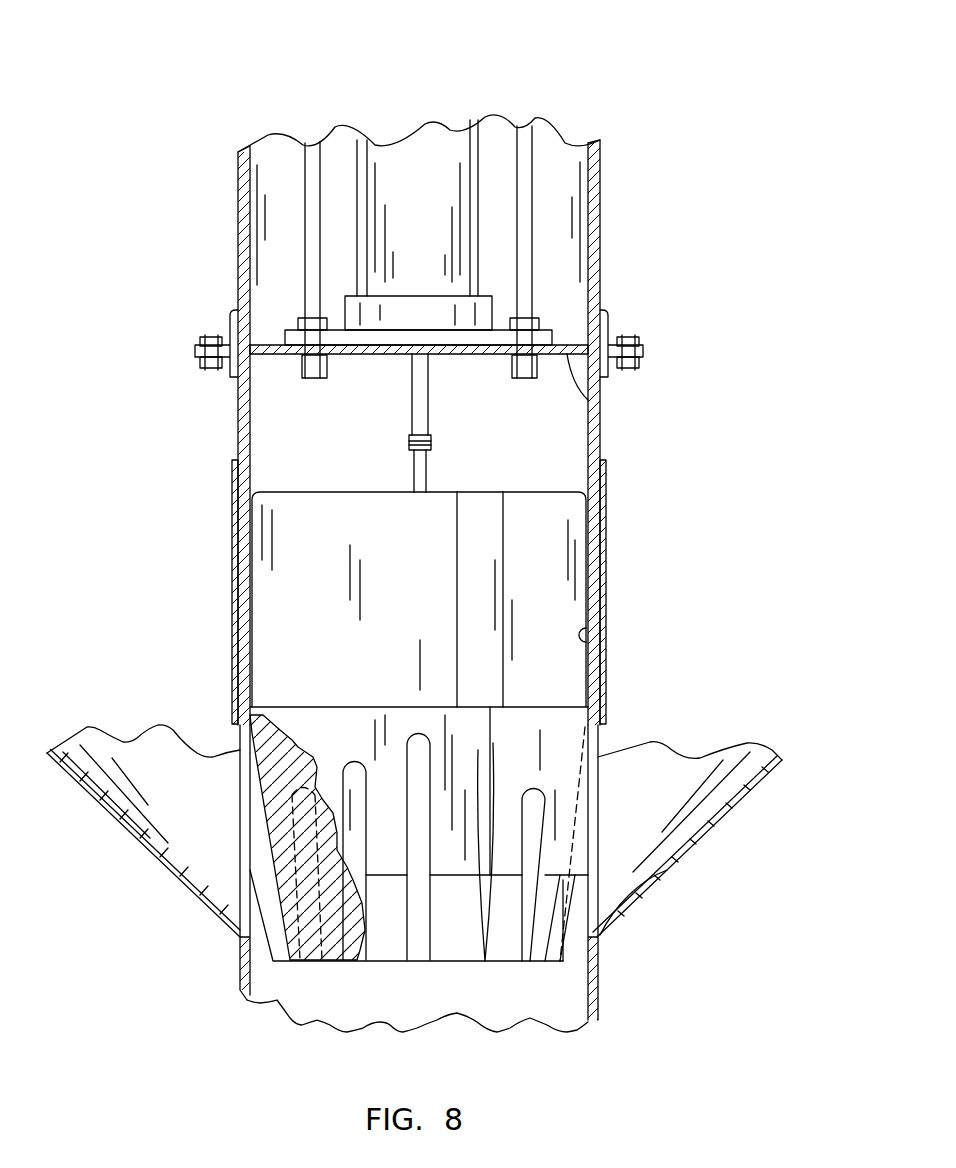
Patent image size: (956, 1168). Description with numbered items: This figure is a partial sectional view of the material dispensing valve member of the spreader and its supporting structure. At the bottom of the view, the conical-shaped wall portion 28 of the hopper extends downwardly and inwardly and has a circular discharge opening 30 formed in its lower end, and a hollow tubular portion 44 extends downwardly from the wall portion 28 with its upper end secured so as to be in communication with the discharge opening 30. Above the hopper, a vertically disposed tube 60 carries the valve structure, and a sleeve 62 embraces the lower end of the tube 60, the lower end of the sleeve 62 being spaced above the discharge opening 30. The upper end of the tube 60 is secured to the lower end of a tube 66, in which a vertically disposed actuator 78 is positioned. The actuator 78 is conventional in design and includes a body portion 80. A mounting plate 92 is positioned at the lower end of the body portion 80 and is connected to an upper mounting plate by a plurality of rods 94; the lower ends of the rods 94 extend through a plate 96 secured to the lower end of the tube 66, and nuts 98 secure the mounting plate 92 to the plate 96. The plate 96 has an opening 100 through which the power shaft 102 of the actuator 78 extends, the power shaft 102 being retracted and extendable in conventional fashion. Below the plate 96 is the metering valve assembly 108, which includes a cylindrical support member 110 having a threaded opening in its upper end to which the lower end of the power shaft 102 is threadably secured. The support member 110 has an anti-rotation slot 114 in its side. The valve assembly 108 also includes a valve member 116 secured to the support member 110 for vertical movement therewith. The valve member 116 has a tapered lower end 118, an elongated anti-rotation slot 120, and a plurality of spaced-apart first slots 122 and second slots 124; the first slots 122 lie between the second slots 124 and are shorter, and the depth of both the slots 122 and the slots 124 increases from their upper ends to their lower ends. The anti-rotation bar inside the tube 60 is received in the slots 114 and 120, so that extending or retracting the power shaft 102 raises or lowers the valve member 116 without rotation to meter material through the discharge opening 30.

The actuator 78 is at (428, 124).
The tube 66 is at (603, 181).
The body portion 80 is at (447, 219).
The rods 94 is at (527, 262).
The mounting plate 92 is at (540, 335).
The nuts 98 is at (300, 358).
The power shaft 102 is at (413, 407).
The plate 96 is at (568, 356).
The opening 100 is at (428, 357).
The sleeve 62 is at (606, 505).
The metering valve assembly 108 is at (305, 613).
The cylindrical support member 110 is at (328, 577).
The anti-rotation slot 114 is at (485, 588).
The tube 60 is at (588, 642).
The valve member 116 is at (294, 728).
The first slots 122 is at (353, 770).
The second slots 124 is at (420, 735).
The anti-rotation slot 120 is at (490, 961).
The tapered lower end 118 is at (577, 940).
The tubular portion 44 is at (598, 992).
The conical-shaped wall portion 28 is at (672, 762).
The discharge opening 30 is at (667, 870).